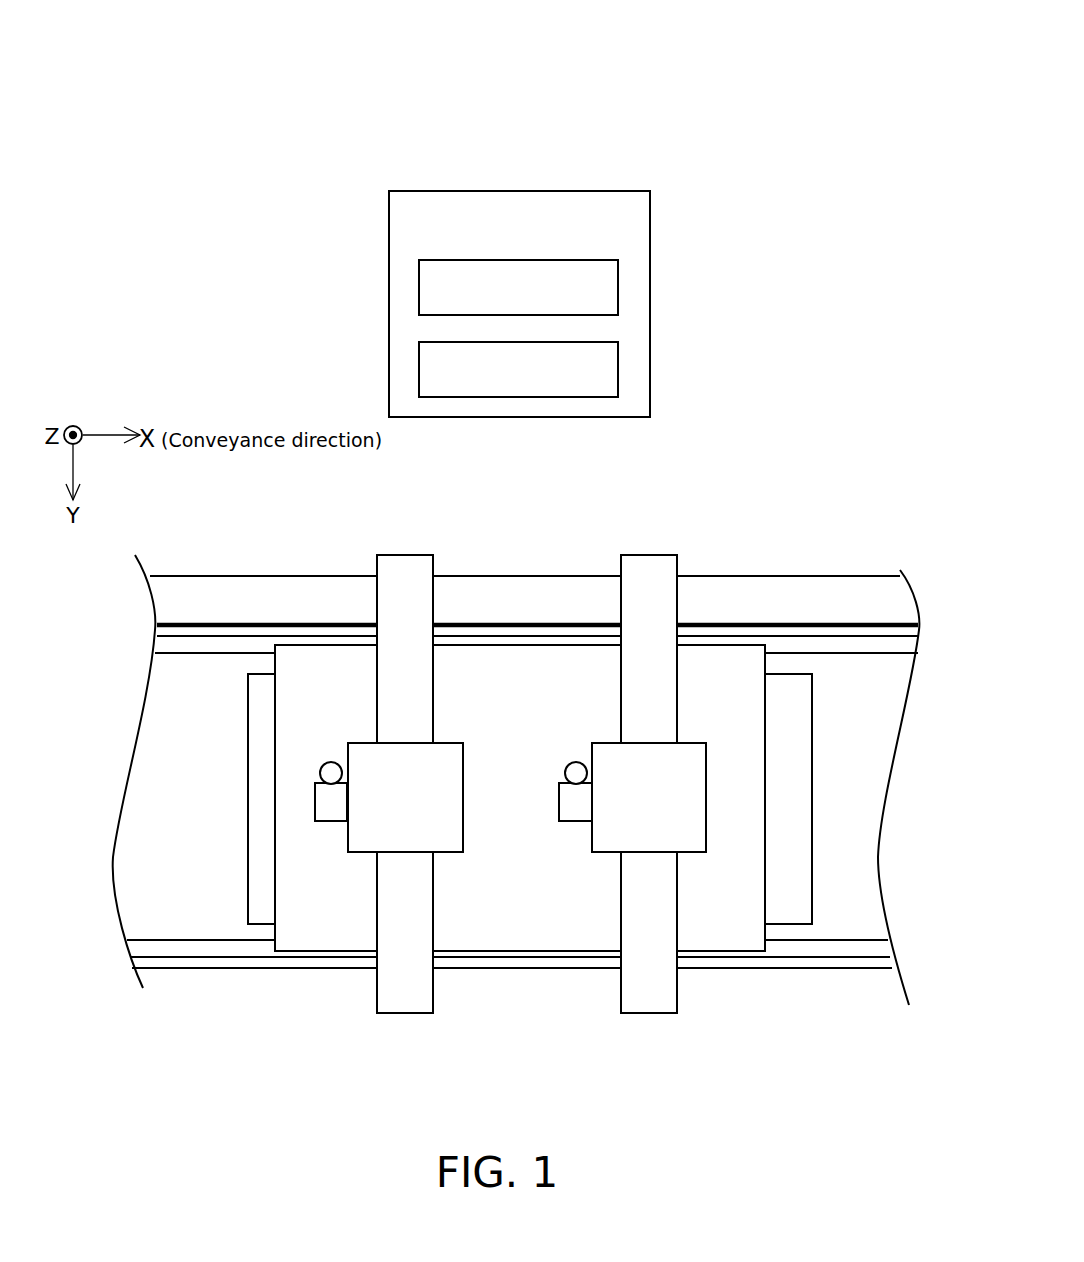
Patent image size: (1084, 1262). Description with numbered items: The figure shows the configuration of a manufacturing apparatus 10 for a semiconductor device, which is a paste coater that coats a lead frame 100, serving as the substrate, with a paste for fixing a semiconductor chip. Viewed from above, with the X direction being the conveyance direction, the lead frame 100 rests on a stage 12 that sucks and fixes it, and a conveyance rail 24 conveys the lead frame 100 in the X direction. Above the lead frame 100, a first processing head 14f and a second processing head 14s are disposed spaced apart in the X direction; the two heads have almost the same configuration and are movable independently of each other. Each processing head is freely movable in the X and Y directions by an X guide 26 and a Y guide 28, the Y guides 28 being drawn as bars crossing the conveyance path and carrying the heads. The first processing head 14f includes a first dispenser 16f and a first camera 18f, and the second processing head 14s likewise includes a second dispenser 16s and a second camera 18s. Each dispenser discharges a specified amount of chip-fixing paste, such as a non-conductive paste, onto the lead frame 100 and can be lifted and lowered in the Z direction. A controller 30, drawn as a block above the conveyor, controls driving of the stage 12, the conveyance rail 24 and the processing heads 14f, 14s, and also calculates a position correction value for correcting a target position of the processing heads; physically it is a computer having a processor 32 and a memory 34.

The manufacturing apparatus 10 is at (577, 118).
The stage 12 is at (812, 897).
The first processing head 14f is at (463, 808).
The second processing head 14s is at (706, 830).
The first dispenser 16f is at (328, 823).
The second dispenser 16s is at (567, 823).
The first camera 18f is at (330, 762).
The second camera 18s is at (575, 762).
The conveyance rail 24 is at (812, 970).
The X guide 26 is at (280, 586).
The Y guide 28 is at (413, 555).
The controller 30 is at (625, 190).
The processor 32 is at (618, 280).
The memory 34 is at (618, 366).
The lead frame 100 is at (765, 812).